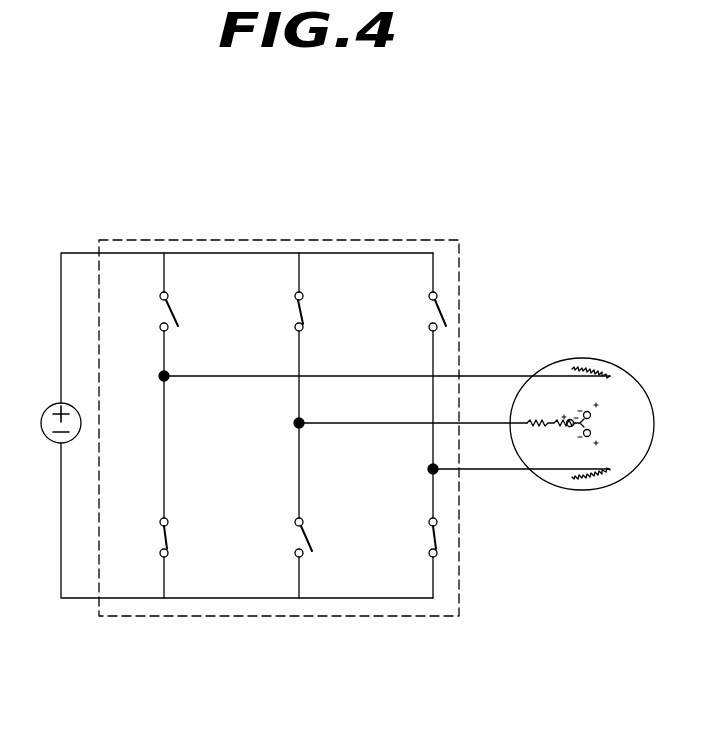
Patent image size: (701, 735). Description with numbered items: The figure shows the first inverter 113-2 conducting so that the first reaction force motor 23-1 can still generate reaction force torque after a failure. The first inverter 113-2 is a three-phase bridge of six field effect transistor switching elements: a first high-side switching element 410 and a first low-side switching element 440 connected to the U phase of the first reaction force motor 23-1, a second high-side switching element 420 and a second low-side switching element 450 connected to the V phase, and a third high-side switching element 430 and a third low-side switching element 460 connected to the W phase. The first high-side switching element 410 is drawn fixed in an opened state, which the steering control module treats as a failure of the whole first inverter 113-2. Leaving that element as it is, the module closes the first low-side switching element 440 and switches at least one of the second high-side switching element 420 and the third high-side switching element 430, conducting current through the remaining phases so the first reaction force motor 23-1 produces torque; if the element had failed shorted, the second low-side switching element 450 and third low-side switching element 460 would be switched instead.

The first inverter 113-2 is at (290, 240).
The first high-side switching element 410 is at (180, 314).
The second high-side switching element 420 is at (305, 313).
The third high-side switching element 430 is at (448, 313).
The first low-side switching element 440 is at (170, 539).
The second low-side switching element 450 is at (313, 539).
The third low-side switching element 460 is at (439, 539).
The first reaction force motor 23-1 is at (583, 358).